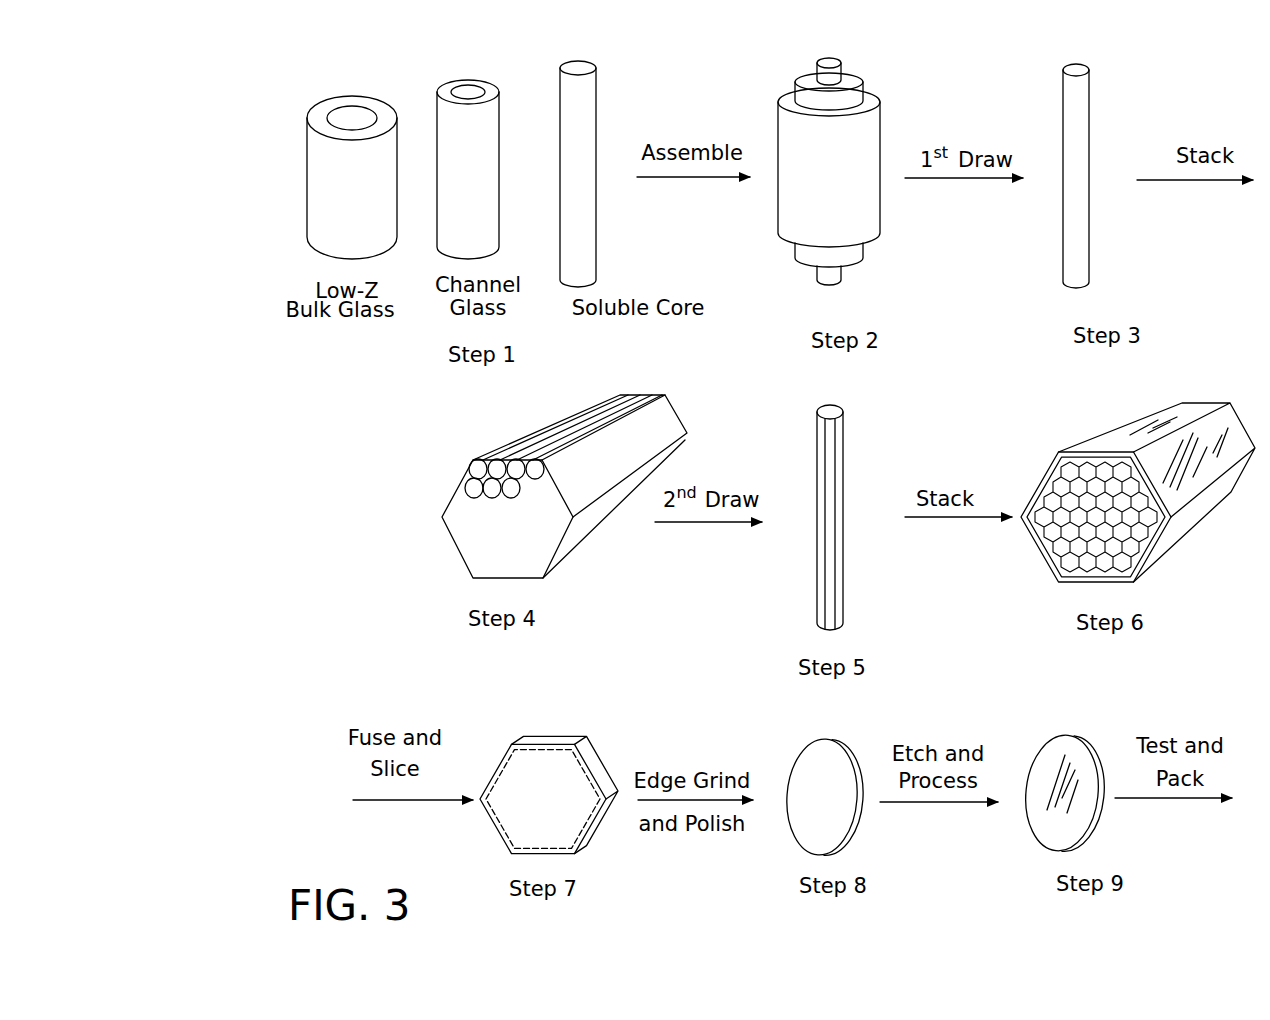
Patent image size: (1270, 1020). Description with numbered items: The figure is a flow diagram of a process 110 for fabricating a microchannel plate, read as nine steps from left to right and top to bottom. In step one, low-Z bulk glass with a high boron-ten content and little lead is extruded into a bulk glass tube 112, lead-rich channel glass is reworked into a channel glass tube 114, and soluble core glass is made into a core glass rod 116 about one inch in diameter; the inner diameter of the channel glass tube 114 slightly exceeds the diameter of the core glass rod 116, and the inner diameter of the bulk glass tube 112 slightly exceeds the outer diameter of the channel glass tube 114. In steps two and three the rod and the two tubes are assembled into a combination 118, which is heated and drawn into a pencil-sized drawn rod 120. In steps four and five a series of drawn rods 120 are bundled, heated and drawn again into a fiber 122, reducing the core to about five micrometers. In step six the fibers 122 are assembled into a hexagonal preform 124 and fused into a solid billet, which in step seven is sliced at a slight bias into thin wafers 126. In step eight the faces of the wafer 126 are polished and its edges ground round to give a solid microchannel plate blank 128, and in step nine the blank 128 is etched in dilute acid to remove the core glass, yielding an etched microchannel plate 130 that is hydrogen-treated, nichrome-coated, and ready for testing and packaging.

The process 110 is at (272, 61).
The bulk glass tube 112 is at (306, 178).
The channel glass tube 114 is at (436, 121).
The core glass rod 116 is at (596, 115).
The combination 118 is at (880, 115).
The drawn rod 120 is at (1090, 115).
The fiber 122 is at (843, 468).
The hexagonal preform 124 is at (1110, 430).
The thin wafer 126 is at (560, 735).
The solid microchannel plate blank 128 is at (824, 742).
The etched microchannel plate 130 is at (1063, 735).